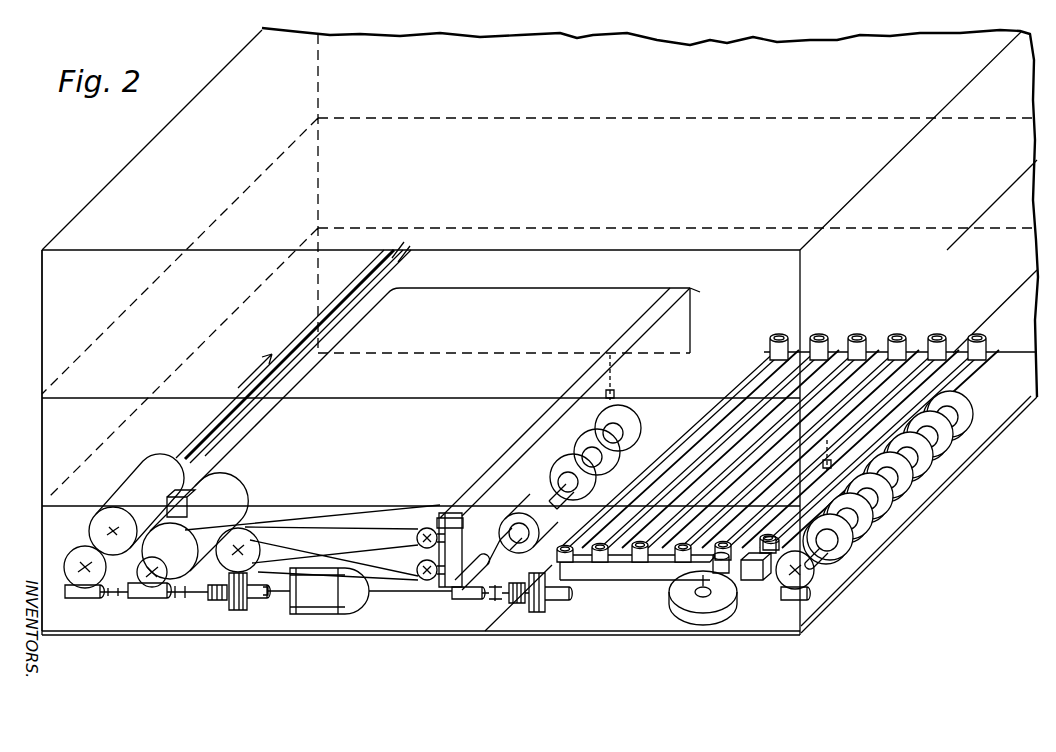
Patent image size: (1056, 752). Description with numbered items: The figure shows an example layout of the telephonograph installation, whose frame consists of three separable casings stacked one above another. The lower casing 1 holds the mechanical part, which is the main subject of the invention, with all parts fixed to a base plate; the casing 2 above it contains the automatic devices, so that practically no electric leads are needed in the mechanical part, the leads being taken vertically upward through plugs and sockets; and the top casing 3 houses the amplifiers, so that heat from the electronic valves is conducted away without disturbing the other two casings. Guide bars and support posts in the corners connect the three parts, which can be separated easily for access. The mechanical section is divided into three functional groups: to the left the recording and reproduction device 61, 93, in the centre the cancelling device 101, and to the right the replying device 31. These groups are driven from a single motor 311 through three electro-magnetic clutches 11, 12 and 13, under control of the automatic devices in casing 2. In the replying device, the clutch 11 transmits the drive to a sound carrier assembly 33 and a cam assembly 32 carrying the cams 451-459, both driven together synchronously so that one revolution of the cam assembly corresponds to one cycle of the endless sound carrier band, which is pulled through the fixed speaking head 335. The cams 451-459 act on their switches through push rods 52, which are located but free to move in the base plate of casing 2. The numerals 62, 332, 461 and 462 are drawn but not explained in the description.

The lower casing 1 is at (55, 548).
The casing 2 is at (55, 433).
The top casing 3 is at (55, 298).
The electro-magnetic clutch 11 is at (549, 600).
The electro-magnetic clutch 12 is at (540, 530).
The electro-magnetic clutch 13 is at (240, 610).
The replying device 31 is at (780, 618).
The cam assembly 32 is at (840, 548).
The sound carrier assembly 33 is at (656, 538).
The push rods 52 is at (616, 384).
The recording and reproduction device 61 is at (170, 592).
The conveyor roller 62 is at (212, 438).
The recording and reproduction device 93 is at (262, 535).
The cancelling device 101 is at (655, 384).
The motor 311 is at (362, 600).
The side wall 332 is at (692, 290).
The fixed speaking head 335 is at (740, 612).
The cams 451-459 is at (868, 520).
The roller 461 is at (630, 421).
The roller 462 is at (628, 443).